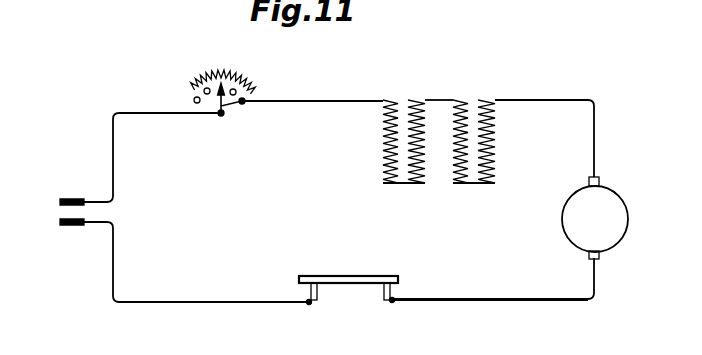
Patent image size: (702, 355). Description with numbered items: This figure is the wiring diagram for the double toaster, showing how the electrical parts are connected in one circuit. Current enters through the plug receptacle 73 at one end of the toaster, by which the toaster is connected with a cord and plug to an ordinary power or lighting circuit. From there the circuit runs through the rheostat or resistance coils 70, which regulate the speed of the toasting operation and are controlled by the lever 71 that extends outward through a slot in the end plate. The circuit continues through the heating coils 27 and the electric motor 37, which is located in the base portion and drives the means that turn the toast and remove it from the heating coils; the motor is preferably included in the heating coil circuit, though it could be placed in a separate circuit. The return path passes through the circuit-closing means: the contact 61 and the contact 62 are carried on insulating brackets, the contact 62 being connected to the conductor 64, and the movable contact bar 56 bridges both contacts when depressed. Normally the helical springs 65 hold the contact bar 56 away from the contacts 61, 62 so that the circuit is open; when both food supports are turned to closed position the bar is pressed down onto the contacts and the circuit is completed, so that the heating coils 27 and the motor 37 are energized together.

The rheostat or resistance coils 70 is at (232, 74).
The lever 71 is at (224, 113).
The coils 27 is at (381, 146).
The electric motor 37 is at (595, 218).
The plug receptacle 73 is at (52, 206).
The helical springs 65 is at (255, 300).
The conductor 64 is at (525, 280).
The contact bar 56 is at (345, 276).
The contact 61 is at (318, 300).
The contact 62 is at (381, 302).